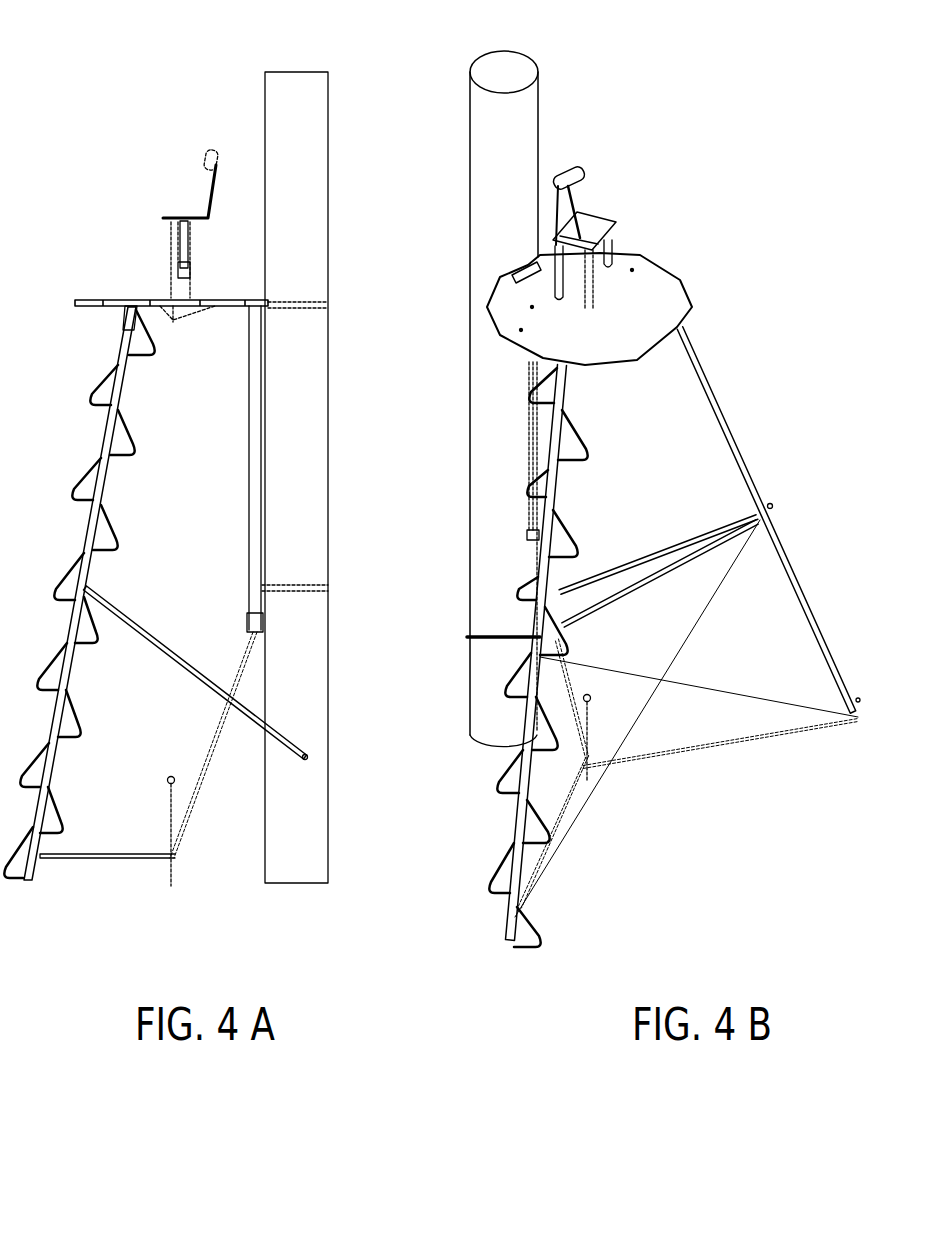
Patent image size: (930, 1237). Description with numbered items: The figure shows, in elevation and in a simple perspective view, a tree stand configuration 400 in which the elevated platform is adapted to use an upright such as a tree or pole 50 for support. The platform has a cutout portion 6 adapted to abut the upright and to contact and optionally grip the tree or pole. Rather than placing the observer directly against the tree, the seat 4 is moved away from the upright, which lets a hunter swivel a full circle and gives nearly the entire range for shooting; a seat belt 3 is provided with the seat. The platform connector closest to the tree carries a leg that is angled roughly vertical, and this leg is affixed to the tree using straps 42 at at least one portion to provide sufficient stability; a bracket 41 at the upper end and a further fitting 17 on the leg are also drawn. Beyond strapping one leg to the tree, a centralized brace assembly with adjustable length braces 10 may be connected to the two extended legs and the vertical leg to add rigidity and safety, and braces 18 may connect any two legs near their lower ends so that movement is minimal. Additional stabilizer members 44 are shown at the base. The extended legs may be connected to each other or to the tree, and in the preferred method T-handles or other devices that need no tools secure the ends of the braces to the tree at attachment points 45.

In FIG. 4A, the tree stand configuration 400 is at (206, 105).
In FIG. 4B, the post 50 is at (503, 70).
In FIG. 4B, the seat 4 is at (560, 170).
In FIG. 4B, the cutout portion 6 is at (527, 266).
In FIG. 4B, the mounting bracket 41 is at (512, 273).
In FIG. 4B, the straps 42 is at (500, 280).
In FIG. 4B, the seat belt 3 is at (610, 240).
In FIG. 4A, the vertical support bar 17 is at (252, 585).
In FIG. 4A, the braces 18 is at (200, 676).
In FIG. 4B, the braces 18 is at (508, 640).
In FIG. 4A, the attachment points 45 is at (306, 758).
In FIG. 4B, the stabilizer bar 44 is at (693, 688).
In FIG. 4B, the adjustable length braces 10 is at (767, 737).